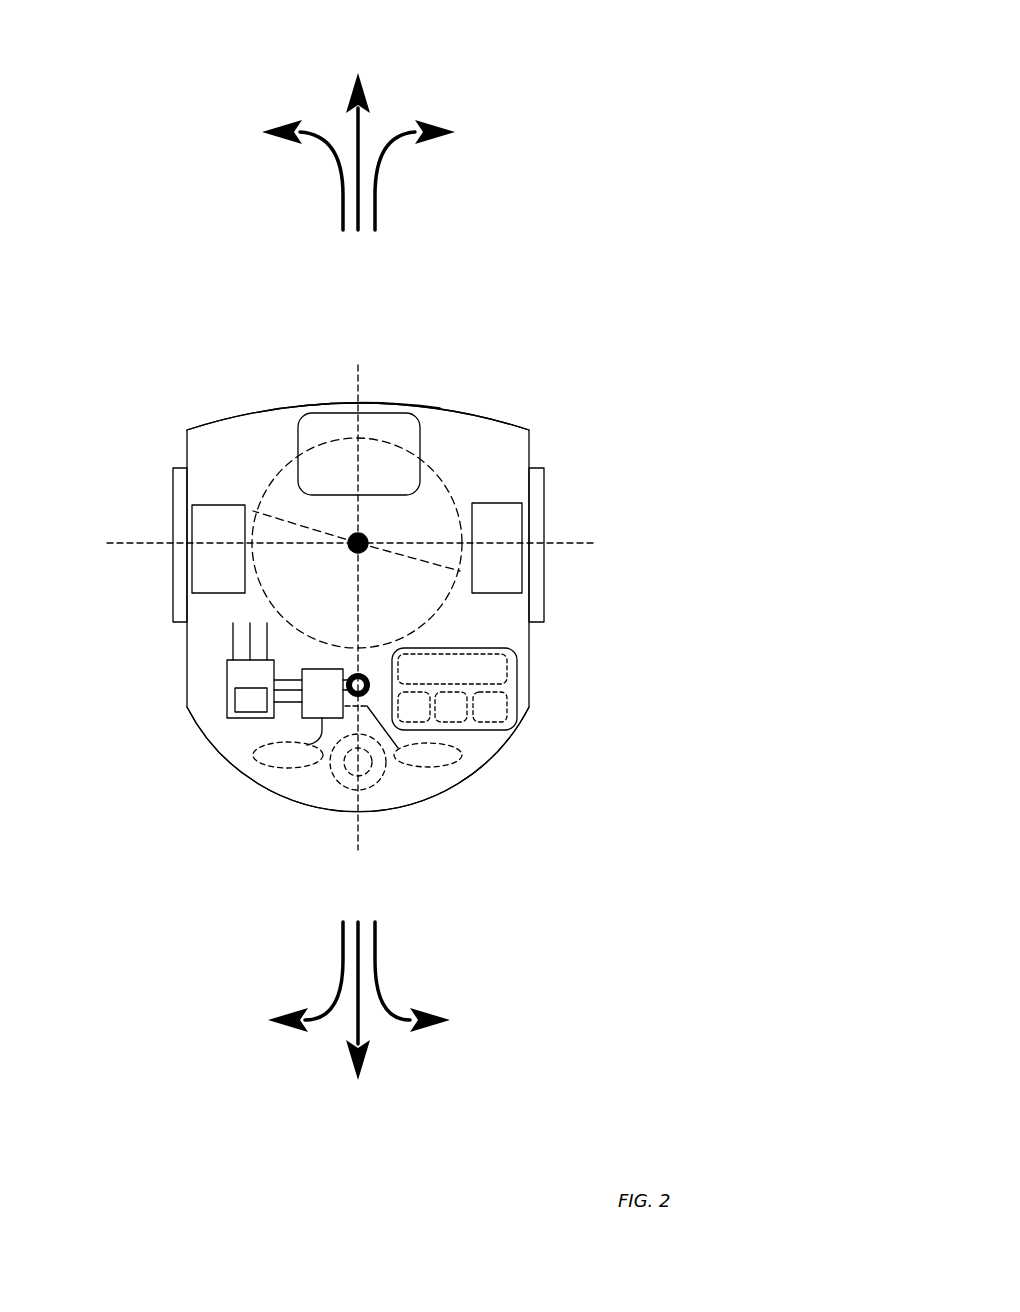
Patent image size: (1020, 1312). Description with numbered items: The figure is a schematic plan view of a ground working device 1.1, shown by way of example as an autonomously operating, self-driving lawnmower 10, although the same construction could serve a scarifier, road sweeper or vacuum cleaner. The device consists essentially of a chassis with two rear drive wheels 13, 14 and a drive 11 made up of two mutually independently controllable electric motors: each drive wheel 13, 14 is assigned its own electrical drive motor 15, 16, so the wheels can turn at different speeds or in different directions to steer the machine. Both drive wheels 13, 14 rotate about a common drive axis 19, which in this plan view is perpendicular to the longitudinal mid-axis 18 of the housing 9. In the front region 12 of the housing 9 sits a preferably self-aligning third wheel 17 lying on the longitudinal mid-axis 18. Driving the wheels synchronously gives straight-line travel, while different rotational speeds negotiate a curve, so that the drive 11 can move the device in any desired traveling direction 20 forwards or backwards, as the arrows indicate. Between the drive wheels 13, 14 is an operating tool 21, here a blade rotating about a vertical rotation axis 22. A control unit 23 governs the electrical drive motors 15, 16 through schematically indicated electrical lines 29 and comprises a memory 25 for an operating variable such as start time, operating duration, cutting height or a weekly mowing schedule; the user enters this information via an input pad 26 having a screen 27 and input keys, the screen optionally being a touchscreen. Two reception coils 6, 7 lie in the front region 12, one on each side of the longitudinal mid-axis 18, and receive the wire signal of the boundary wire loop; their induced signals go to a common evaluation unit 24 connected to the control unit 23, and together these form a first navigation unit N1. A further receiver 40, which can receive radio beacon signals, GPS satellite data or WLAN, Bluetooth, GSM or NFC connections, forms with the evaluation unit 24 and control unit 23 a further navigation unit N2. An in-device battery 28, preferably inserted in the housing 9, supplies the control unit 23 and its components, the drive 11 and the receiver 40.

The ground working device 1.1 is at (590, 325).
The reception coil 6 is at (272, 767).
The reception coil 7 is at (462, 758).
The housing 9 is at (432, 417).
The lawnmower 10 is at (323, 403).
The drive 11 is at (524, 579).
The front region 12 is at (478, 800).
The drive wheel 13 is at (173, 513).
The drive wheel 14 is at (544, 470).
The electrical drive motor 15 is at (217, 505).
The electrical drive motor 16 is at (497, 520).
The third wheel 17 is at (377, 783).
The longitudinal mid-axis 18 is at (358, 364).
The drive axis 19 is at (597, 543).
The traveling direction 20 is at (368, 173).
The operating tool 21 is at (283, 520).
The vertical rotation axis 22 is at (368, 540).
The control unit 23 is at (227, 695).
The evaluation unit 24 is at (302, 717).
The memory 25 is at (245, 702).
The input pad 26 is at (515, 702).
The screen 27 is at (497, 672).
The battery 28 is at (385, 432).
The electrical lines 29 is at (247, 642).
The receiver 40 is at (363, 676).
The first navigation unit N1 is at (317, 779).
The further navigation unit N2 is at (348, 648).